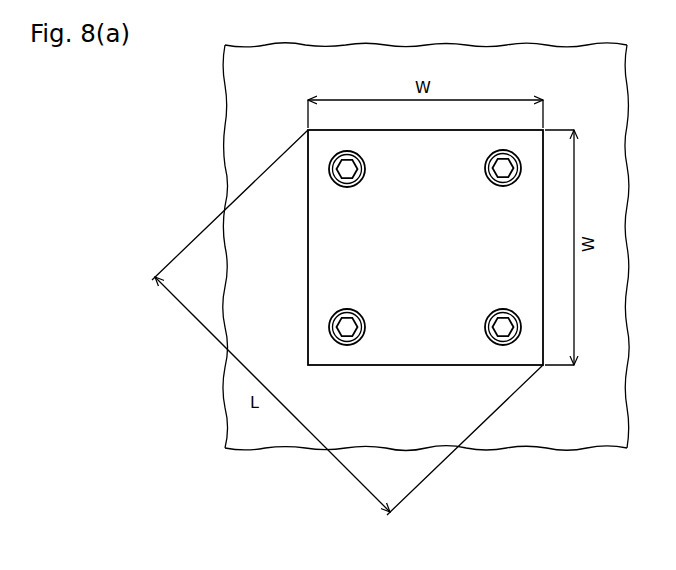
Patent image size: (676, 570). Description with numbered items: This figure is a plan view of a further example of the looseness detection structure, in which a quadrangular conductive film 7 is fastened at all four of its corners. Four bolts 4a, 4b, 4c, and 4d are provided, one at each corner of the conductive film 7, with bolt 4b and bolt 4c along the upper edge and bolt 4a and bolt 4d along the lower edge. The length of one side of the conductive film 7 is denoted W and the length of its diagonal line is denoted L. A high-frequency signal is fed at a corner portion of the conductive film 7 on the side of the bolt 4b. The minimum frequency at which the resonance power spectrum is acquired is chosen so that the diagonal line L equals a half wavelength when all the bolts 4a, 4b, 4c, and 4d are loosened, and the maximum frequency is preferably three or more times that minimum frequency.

The conductive film 7 is at (312, 263).
The bolt 4a is at (366, 327).
The bolt 4b is at (366, 170).
The bolt 4c is at (486, 170).
The bolt 4d is at (486, 323).